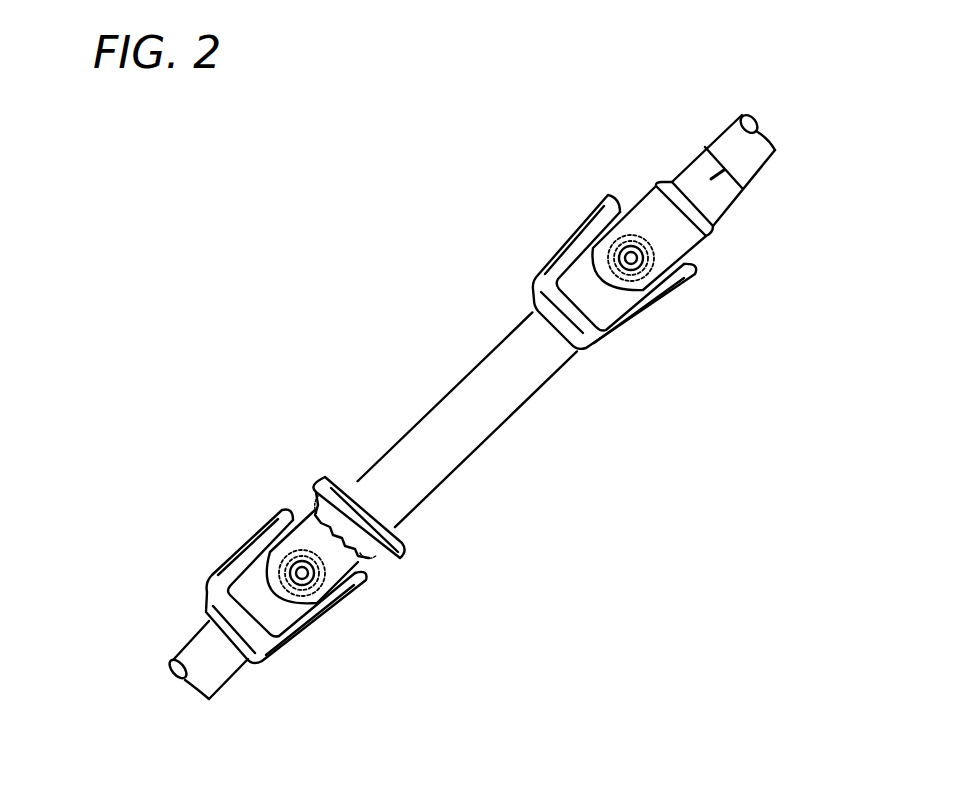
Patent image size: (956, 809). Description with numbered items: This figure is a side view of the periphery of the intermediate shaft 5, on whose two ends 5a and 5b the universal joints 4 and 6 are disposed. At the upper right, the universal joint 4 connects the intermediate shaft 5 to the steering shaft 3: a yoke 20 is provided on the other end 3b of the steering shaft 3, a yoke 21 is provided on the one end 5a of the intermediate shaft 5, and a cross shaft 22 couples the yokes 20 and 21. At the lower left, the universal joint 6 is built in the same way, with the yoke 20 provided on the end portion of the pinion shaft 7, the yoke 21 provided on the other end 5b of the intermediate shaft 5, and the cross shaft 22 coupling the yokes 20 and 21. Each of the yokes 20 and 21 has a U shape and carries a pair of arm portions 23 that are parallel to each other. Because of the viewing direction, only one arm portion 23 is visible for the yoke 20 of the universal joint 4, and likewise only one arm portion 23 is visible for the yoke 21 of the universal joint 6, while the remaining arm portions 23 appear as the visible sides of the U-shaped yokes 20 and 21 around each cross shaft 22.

The steering shaft 3 is at (758, 173).
The other end of the steering shaft 3b is at (693, 172).
The universal joint 4 is at (466, 426).
The intermediate shaft 5 is at (452, 434).
The one end of the intermediate shaft 5a is at (553, 357).
The other end of the intermediate shaft 5b is at (400, 503).
The universal joint 6 is at (280, 492).
The pinion shaft 7 is at (195, 654).
The yoke 20 is at (648, 230).
The yoke 21 is at (633, 330).
The cross shaft 22 is at (608, 227).
The arm portion 23 is at (543, 257).